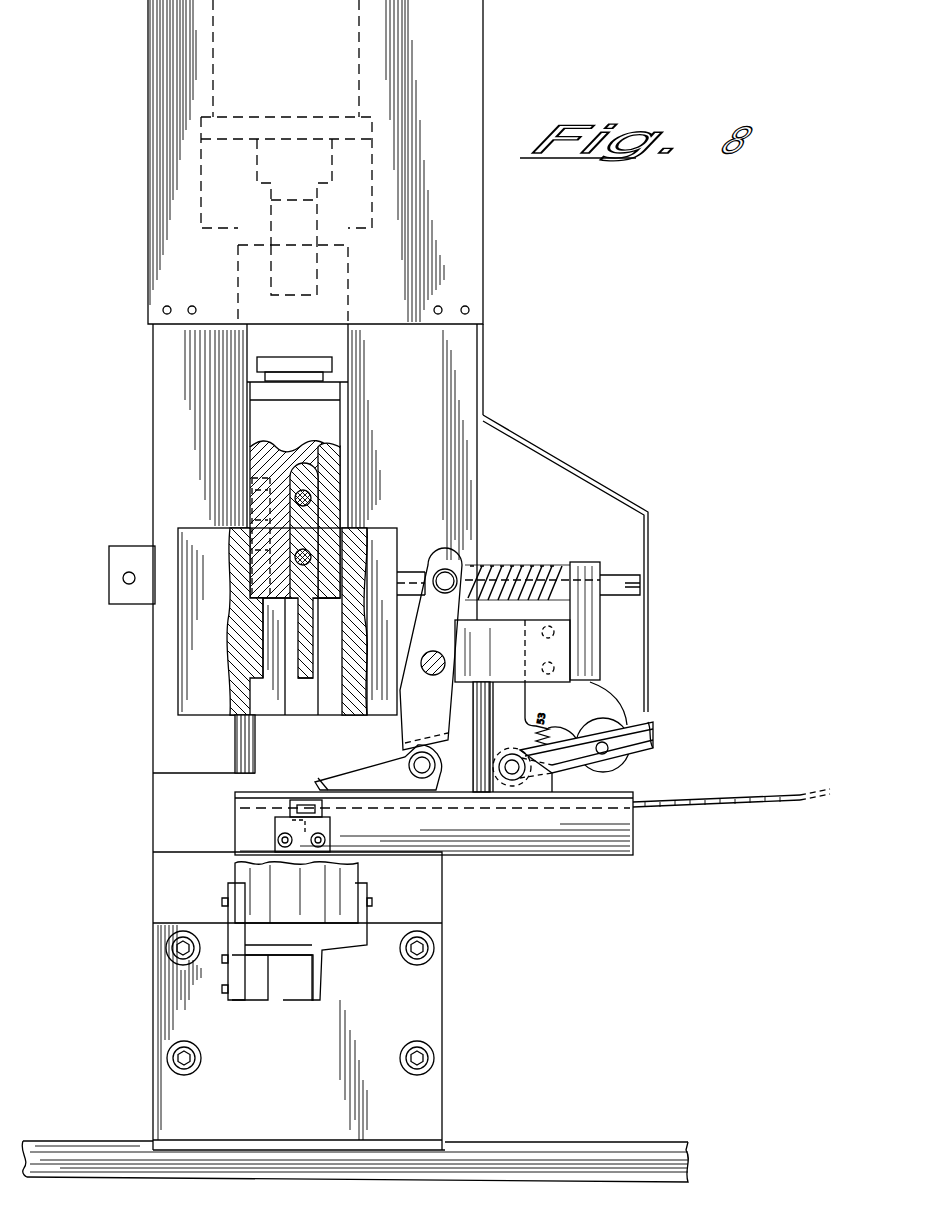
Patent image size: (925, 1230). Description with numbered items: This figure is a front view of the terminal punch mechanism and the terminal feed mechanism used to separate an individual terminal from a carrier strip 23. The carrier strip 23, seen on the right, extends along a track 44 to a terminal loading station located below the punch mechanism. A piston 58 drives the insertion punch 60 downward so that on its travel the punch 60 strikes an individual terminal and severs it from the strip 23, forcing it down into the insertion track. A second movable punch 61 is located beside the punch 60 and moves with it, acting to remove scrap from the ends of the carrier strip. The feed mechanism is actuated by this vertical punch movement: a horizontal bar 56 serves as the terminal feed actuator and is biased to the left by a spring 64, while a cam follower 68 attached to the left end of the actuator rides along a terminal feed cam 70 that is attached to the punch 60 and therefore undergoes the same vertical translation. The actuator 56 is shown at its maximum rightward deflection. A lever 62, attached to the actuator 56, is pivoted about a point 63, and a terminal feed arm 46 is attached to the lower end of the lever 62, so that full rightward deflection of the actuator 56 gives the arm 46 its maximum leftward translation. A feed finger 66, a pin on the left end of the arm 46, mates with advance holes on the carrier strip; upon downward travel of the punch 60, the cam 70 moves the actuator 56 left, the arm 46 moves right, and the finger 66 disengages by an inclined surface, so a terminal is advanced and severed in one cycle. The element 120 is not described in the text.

The piston 58 is at (345, 88).
The terminal feed cam 70 is at (262, 462).
The cam follower 68 is at (313, 572).
The horizontal bar 56 is at (512, 565).
The spring 64 is at (556, 570).
The second movable punch 61 is at (252, 660).
The pivot point 63 is at (421, 663).
The lever 62 is at (446, 630).
The insertion punch 60 is at (300, 680).
The terminal feed arm 46 is at (372, 770).
The feed finger 66 is at (330, 790).
The carrier strip 23 is at (718, 793).
The track 44 is at (600, 808).
The bracket 120 is at (305, 822).